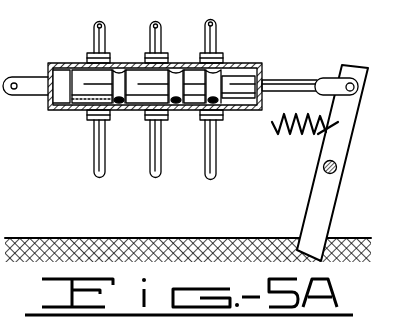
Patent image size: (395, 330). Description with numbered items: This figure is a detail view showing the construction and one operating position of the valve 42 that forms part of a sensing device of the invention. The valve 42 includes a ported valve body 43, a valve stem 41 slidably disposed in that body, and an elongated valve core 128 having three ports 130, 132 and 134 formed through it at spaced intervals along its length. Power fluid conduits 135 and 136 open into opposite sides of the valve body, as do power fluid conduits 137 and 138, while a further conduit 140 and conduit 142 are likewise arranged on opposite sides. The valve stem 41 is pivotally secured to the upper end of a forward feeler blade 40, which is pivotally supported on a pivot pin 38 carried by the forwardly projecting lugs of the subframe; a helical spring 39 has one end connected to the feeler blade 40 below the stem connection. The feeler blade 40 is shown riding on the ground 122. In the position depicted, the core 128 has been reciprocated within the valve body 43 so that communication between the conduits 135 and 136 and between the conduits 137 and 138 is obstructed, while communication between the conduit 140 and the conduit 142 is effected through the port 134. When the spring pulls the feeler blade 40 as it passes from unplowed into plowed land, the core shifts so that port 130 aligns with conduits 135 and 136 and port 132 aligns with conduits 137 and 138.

The pivot pin 38 is at (338, 171).
The helical spring 39 is at (305, 148).
The forward feeler blade 40 is at (350, 143).
The valve stem 41 is at (283, 83).
The valve 42 is at (242, 63).
The valve body 43 is at (171, 50).
The ground 122 is at (167, 240).
The valve core 128 is at (87, 74).
The port 130 is at (114, 101).
The port 132 is at (171, 101).
The port 134 is at (224, 100).
The power fluid conduit 135 is at (93, 23).
The power fluid conduit 136 is at (93, 150).
The power fluid conduit 137 is at (149, 23).
The power fluid conduit 138 is at (149, 170).
The conduit 140 is at (214, 22).
The conduit 142 is at (214, 163).